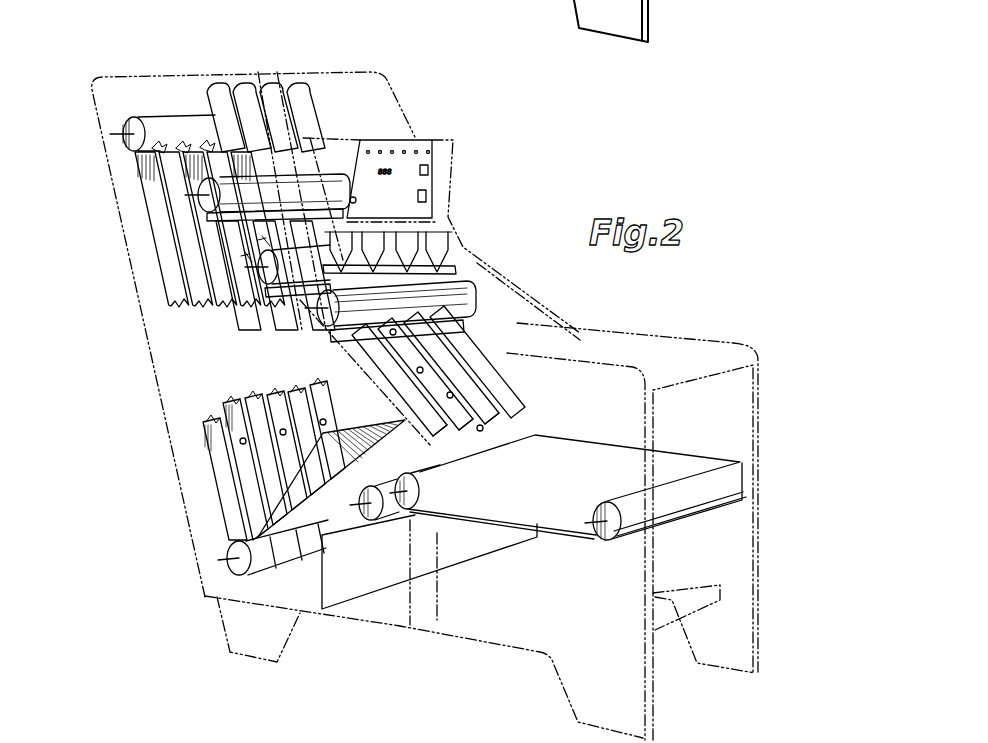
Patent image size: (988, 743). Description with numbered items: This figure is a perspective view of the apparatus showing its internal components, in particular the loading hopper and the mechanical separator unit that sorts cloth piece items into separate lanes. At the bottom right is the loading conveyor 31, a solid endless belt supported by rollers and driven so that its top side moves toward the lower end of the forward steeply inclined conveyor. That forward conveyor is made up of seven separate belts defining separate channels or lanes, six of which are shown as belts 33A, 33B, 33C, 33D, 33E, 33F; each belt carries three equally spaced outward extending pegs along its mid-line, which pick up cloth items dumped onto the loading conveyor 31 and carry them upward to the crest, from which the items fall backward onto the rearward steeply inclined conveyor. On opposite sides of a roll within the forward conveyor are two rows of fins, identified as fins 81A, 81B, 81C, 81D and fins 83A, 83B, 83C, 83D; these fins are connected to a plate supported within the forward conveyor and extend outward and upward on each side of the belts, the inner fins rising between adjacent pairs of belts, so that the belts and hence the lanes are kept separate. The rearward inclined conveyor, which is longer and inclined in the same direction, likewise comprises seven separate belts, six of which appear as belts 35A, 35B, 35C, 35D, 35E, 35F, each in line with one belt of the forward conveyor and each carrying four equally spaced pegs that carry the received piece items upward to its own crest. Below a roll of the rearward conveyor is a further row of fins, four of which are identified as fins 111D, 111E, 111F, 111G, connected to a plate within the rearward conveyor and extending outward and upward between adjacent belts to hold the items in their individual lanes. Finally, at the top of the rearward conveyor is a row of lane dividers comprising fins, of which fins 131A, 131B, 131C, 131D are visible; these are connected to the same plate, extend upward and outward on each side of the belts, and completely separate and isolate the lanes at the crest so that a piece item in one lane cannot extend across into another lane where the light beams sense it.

The loading conveyor 31 is at (683, 463).
The belt of forward inclined conveyor 33A is at (483, 420).
The belt of forward inclined conveyor 33B is at (463, 425).
The belt of forward inclined conveyor 33C is at (440, 430).
The belt of forward inclined conveyor 33D is at (447, 498).
The belt of forward inclined conveyor 33E is at (400, 517).
The belt of forward inclined conveyor 33F is at (367, 517).
The belt of rearward inclined conveyor 35A is at (185, 229).
The belt of rearward inclined conveyor 35B is at (192, 198).
The belt of rearward inclined conveyor 35C is at (215, 182).
The belt of rearward inclined conveyor 35D is at (207, 112).
The belt of rearward inclined conveyor 35E is at (182, 113).
The belt of rearward inclined conveyor 35F is at (153, 114).
The fin 81A is at (437, 338).
The fin 81B is at (420, 345).
The fin 81C is at (395, 352).
The fin 81D is at (370, 360).
The fin 83A is at (462, 274).
The fin 83B is at (440, 246).
The fin 83C is at (395, 243).
The fin 83D is at (370, 240).
The fin 111D is at (245, 258).
The fin 111E is at (262, 243).
The fin 111F is at (218, 252).
The fin 111G is at (195, 257).
The lane divider fin 131A is at (300, 82).
The lane divider fin 131B is at (275, 82).
The lane divider fin 131C is at (243, 83).
The lane divider fin 131D is at (218, 83).